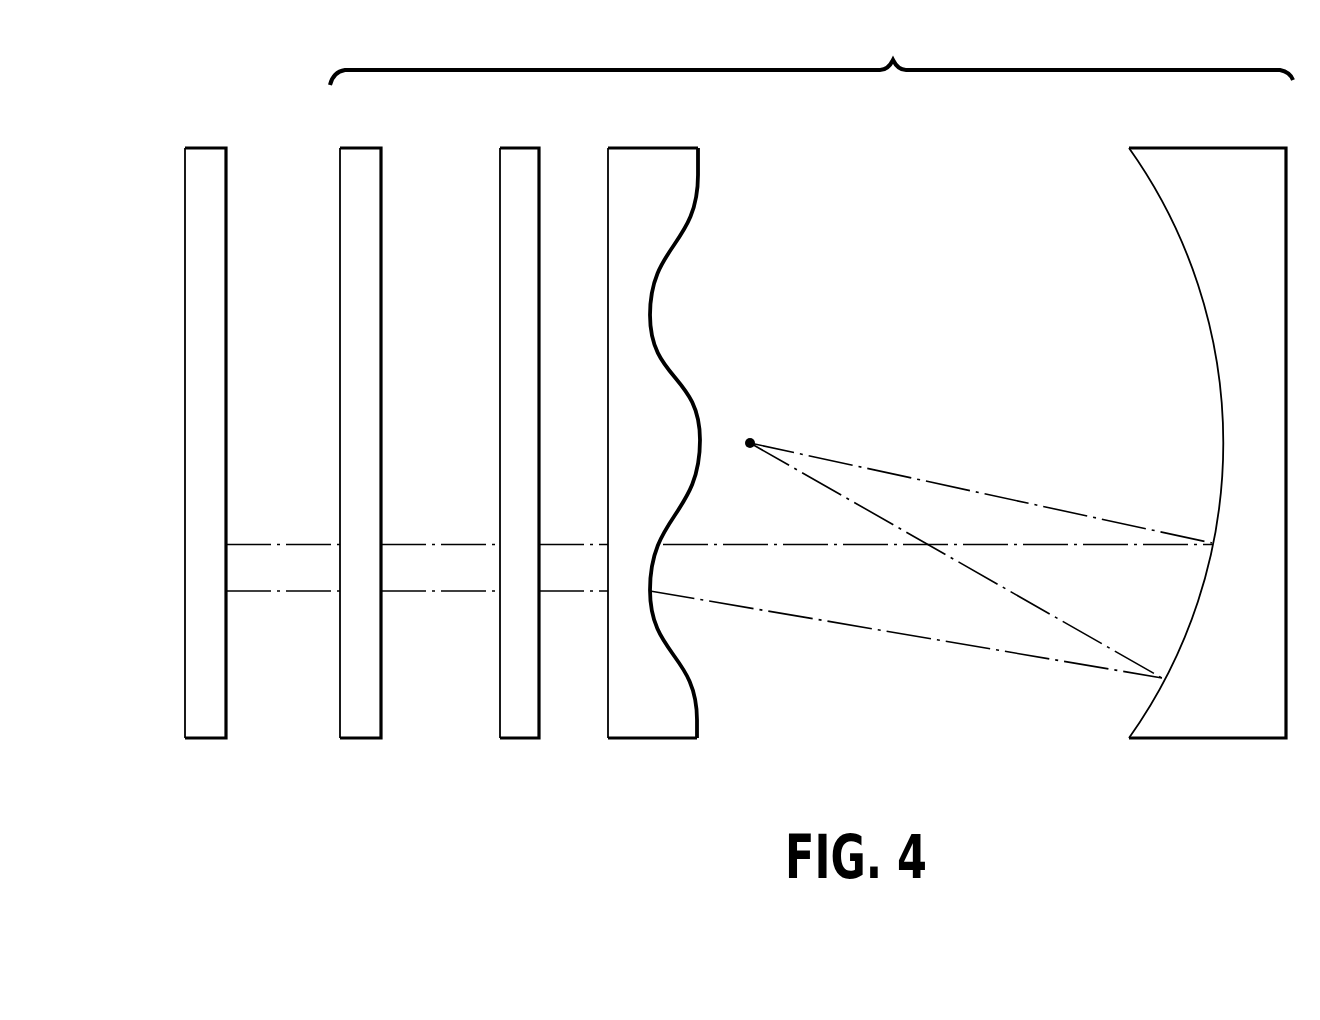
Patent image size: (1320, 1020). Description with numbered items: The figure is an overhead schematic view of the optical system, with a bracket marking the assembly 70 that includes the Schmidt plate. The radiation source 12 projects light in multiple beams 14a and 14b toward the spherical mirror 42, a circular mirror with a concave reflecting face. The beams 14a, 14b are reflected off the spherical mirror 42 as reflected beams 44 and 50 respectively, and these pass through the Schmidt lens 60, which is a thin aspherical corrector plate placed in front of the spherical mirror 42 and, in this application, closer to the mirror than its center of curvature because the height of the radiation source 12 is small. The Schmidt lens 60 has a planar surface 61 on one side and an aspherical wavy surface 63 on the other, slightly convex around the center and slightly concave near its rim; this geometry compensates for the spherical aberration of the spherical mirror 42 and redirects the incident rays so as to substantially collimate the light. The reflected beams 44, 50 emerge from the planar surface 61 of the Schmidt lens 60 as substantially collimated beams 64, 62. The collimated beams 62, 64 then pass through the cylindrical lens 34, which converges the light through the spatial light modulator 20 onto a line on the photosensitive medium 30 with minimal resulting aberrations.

The optical assembly 70 is at (811, 57).
The photosensitive medium 30 is at (210, 152).
The spatial light modulator 20 is at (355, 152).
The cylindrical lens 34 is at (523, 160).
The Schmidt lens 60 is at (657, 155).
The flat surface 61 is at (610, 182).
The wavy surface 63 is at (695, 178).
The spherical mirror 42 is at (1214, 158).
The collimated beam 64 is at (415, 544).
The collimated beam 62 is at (447, 592).
The reflected beam 44 is at (1065, 545).
The reflected beam 50 is at (870, 628).
The radiation source 12 is at (748, 440).
The beam 14a is at (913, 477).
The beam 14b is at (1090, 636).